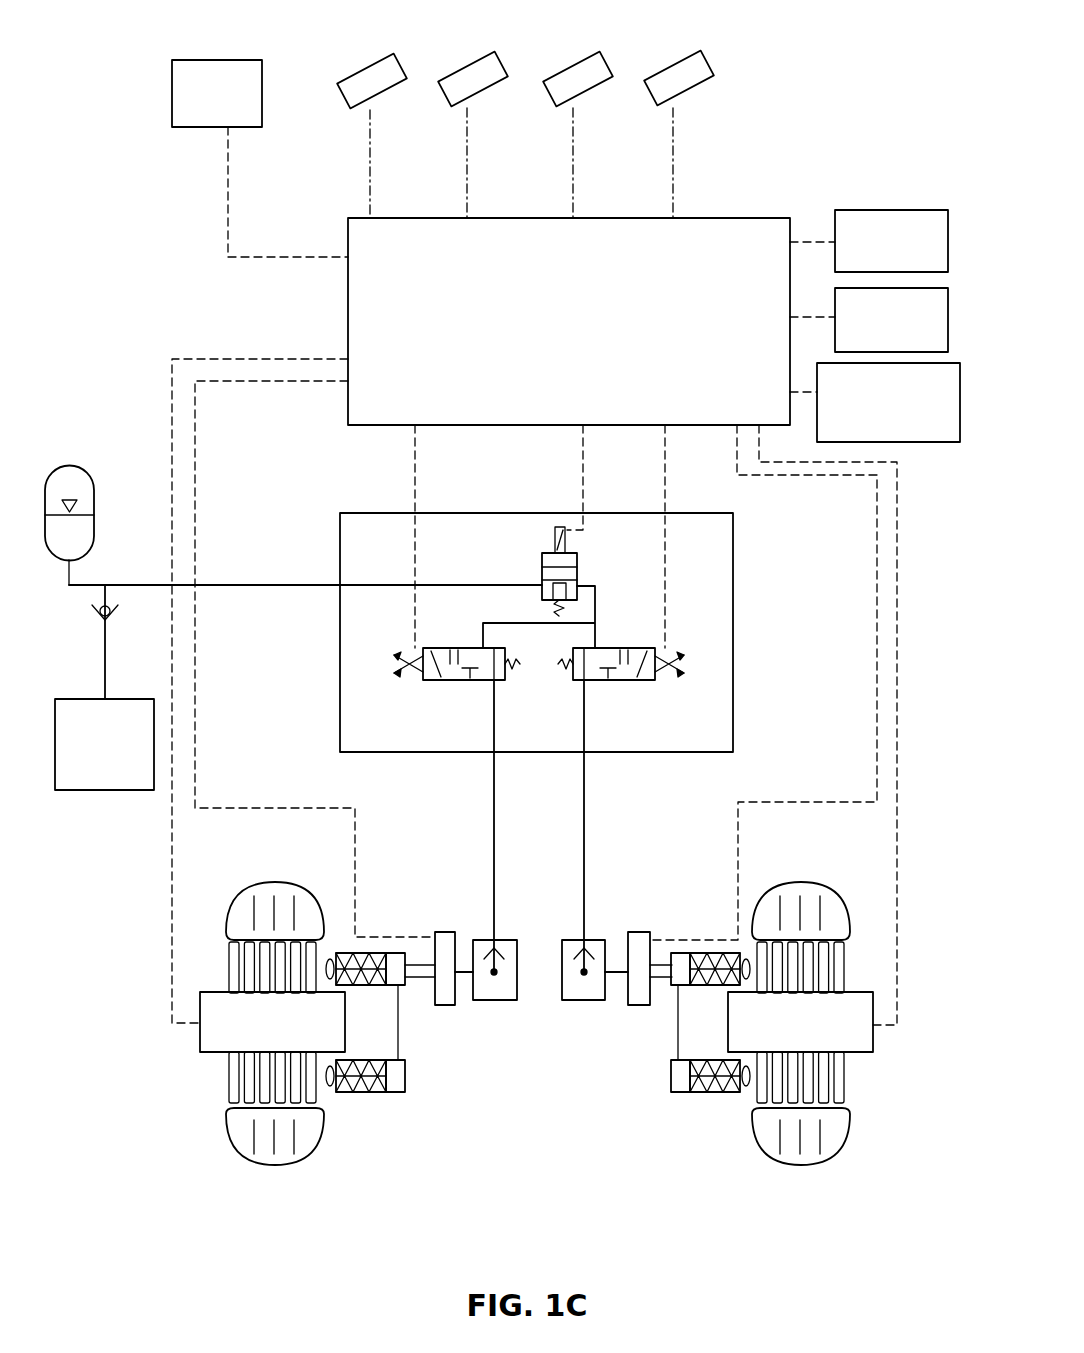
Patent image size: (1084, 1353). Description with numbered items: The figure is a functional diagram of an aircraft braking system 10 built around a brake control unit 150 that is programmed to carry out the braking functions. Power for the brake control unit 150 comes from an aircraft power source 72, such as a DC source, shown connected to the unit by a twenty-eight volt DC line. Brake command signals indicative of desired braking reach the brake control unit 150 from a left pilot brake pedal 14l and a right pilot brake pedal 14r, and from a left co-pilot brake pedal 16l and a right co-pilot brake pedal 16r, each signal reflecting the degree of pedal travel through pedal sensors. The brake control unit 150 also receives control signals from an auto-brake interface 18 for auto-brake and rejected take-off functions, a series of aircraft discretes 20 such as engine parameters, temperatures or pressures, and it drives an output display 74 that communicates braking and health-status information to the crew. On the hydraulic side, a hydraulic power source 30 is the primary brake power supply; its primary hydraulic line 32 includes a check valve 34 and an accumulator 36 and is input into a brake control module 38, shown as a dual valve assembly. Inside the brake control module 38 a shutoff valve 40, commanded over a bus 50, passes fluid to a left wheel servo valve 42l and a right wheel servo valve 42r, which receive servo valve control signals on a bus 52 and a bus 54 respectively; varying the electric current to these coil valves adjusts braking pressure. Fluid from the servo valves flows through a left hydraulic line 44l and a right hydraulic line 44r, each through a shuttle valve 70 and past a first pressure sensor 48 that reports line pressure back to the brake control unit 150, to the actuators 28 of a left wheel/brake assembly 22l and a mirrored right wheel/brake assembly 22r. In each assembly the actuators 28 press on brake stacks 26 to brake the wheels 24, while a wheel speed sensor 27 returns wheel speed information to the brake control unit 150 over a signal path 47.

The braking system 10 is at (157, 62).
The aircraft power source 72 is at (229, 60).
The left pilot brake pedal 14l is at (350, 74).
The right pilot brake pedal 14r is at (498, 66).
The left co-pilot brake pedal 16l is at (545, 82).
The right co-pilot brake pedal 16r is at (713, 62).
The brake control unit 150 is at (545, 359).
The auto-brake interface 18 is at (905, 210).
The aircraft discretes 20 is at (835, 303).
The output display 74 is at (817, 372).
The hydraulic power source 30 is at (95, 790).
The accumulator 36 is at (82, 468).
The primary hydraulic line 32 is at (141, 585).
The check valve 34 is at (94, 608).
The wheel speed sensor signal line 47 is at (243, 691).
The brake control module 38 is at (636, 753).
The bus 52 is at (416, 466).
The bus 50 is at (583, 446).
The bus 54 is at (665, 556).
The shutoff valve 40 is at (577, 570).
The left wheel servo valve 42l is at (462, 682).
The right wheel servo valve 42r is at (620, 682).
The left hydraulic line 44l is at (495, 814).
The right hydraulic line 44r is at (584, 829).
The shuttle valve 70 is at (500, 940).
The first pressure sensor 48 is at (440, 932).
The wheel speed sensor 27 is at (198, 1040).
The wheel 24 is at (255, 884).
The brake stack 26 is at (228, 968).
The actuator 28 is at (350, 985).
The left wheel/brake assembly 22l is at (210, 1152).
The right wheel/brake assembly 22r is at (866, 1102).